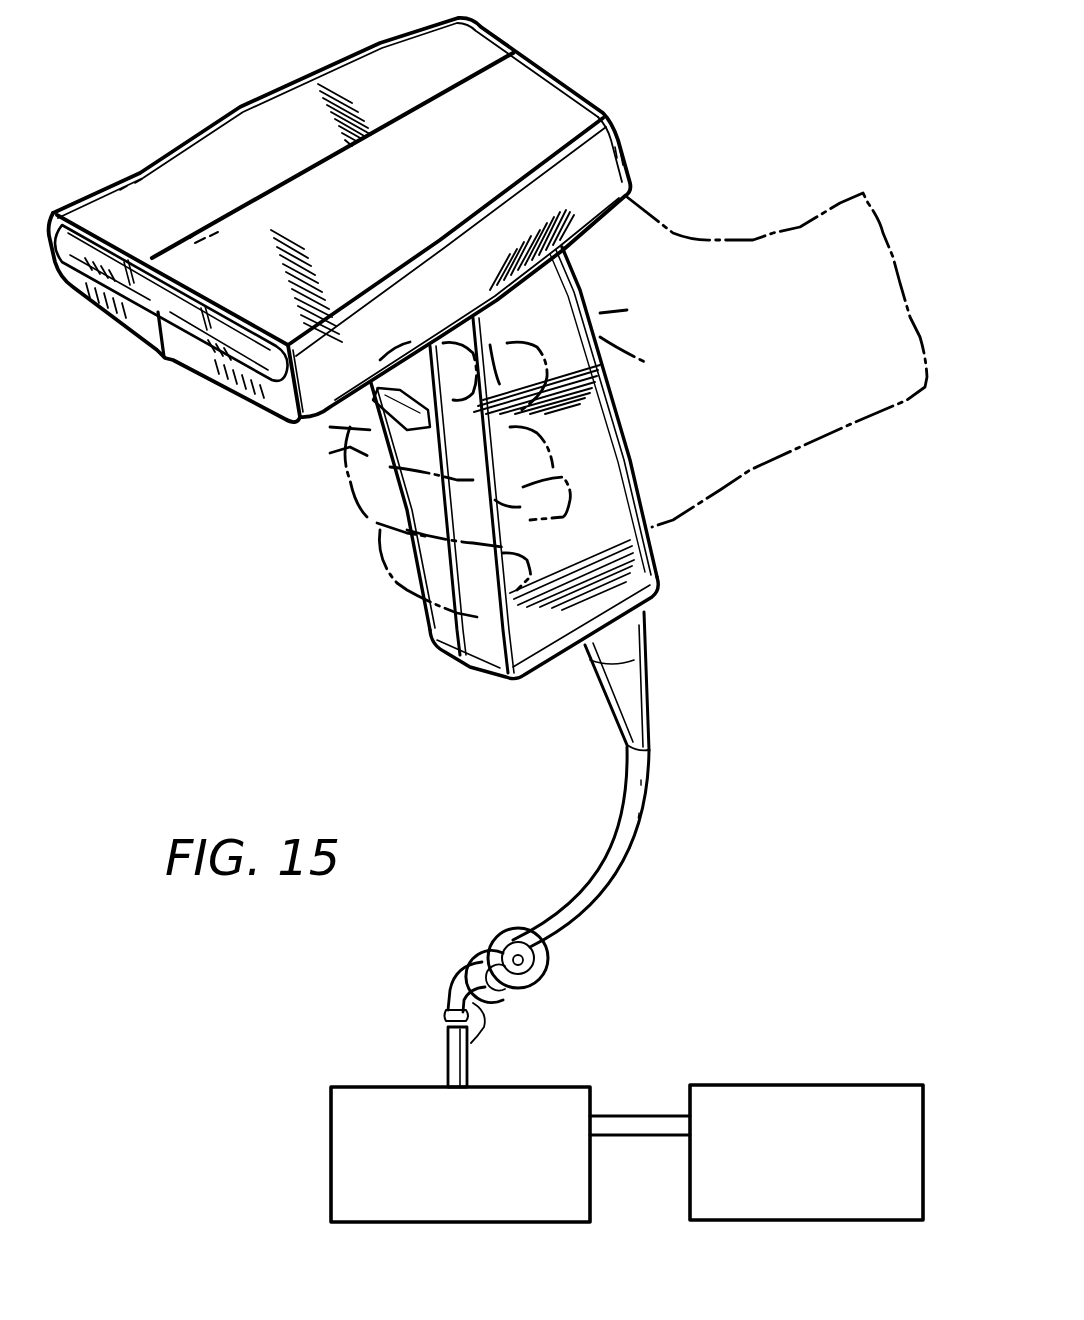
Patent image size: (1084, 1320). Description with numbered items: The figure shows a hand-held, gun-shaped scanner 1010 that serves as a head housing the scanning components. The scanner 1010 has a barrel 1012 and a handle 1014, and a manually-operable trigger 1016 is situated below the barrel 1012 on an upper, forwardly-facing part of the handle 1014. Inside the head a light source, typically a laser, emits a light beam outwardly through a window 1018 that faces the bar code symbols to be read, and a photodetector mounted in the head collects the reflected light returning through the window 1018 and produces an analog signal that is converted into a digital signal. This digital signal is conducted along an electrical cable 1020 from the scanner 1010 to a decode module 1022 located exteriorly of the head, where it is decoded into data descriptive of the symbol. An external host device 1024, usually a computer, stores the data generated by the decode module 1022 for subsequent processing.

The hand-held, gun-shaped scanner 1010 is at (762, 96).
The barrel 1012 is at (577, 70).
The handle 1014 is at (682, 561).
The manually-operable trigger 1016 is at (388, 441).
The window 1018 is at (213, 357).
The electrical cable 1020 is at (647, 688).
The decode module 1022 is at (575, 1085).
The external host device 1024 is at (906, 1085).